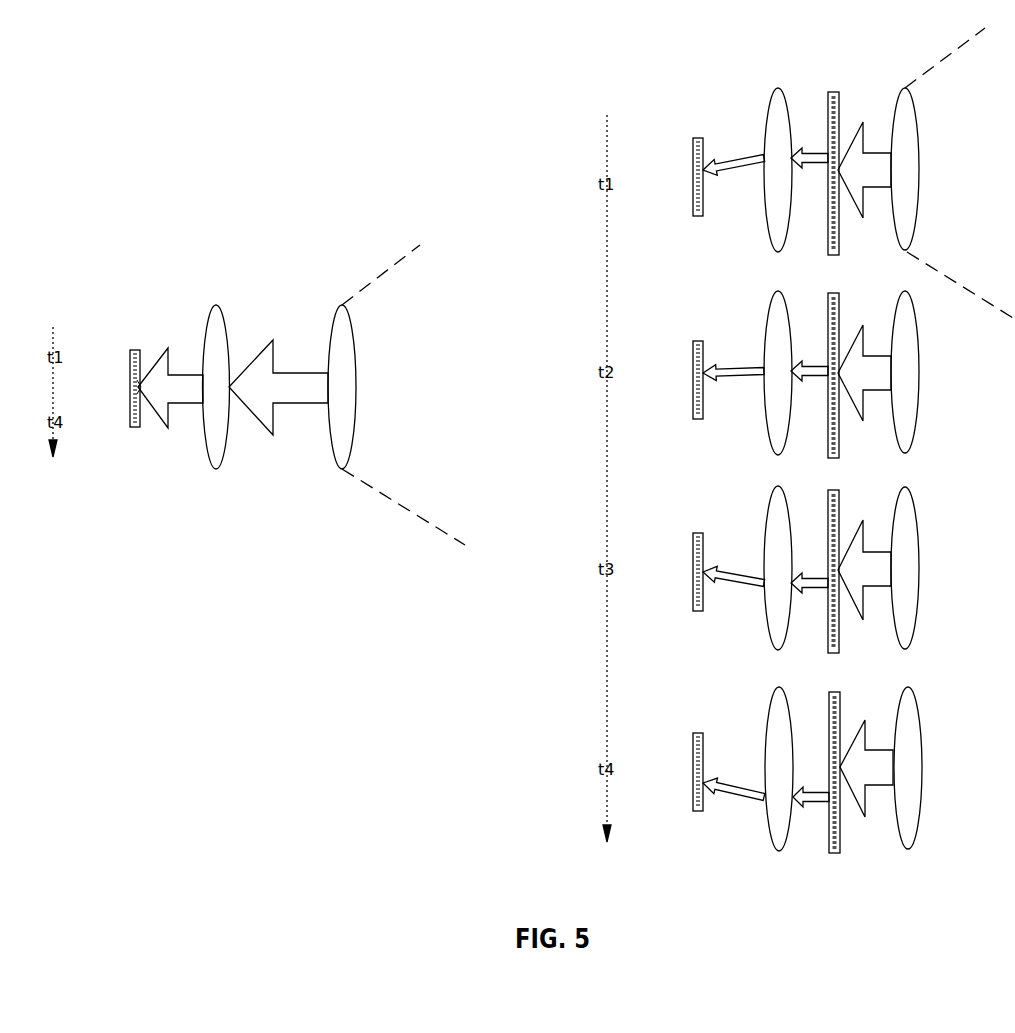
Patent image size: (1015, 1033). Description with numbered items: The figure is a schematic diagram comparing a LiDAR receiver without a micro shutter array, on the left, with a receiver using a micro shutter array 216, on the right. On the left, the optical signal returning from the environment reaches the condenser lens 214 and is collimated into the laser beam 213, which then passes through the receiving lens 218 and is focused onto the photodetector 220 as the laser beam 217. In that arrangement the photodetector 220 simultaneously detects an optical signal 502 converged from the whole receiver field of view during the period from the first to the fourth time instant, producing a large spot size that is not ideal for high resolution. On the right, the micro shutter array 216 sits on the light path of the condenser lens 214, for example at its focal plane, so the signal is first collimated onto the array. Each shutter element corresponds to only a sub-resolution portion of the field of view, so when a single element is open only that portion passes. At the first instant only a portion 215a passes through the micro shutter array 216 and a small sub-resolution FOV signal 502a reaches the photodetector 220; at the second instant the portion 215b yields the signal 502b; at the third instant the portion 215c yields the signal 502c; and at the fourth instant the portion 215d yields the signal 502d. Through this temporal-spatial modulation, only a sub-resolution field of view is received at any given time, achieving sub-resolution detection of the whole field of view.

The laser beam 213 is at (305, 372).
The condenser lens 214 is at (355, 427).
The portion of FOV signal 215a is at (817, 152).
The portion of FOV signal 215b is at (817, 365).
The portion of FOV signal 215c is at (817, 577).
The portion of FOV signal 215d is at (818, 791).
The micro shutter array 216 is at (840, 223).
The laser beam 217 is at (193, 367).
The receiving lens 218 is at (228, 430).
The photodetector 220 is at (130, 383).
The optical signal 502 is at (143, 408).
The sub-resolution FOV signal 502a is at (706, 176).
The sub-resolution FOV signal 502b is at (706, 380).
The sub-resolution FOV signal 502c is at (706, 578).
The sub-resolution FOV signal 502d is at (706, 788).